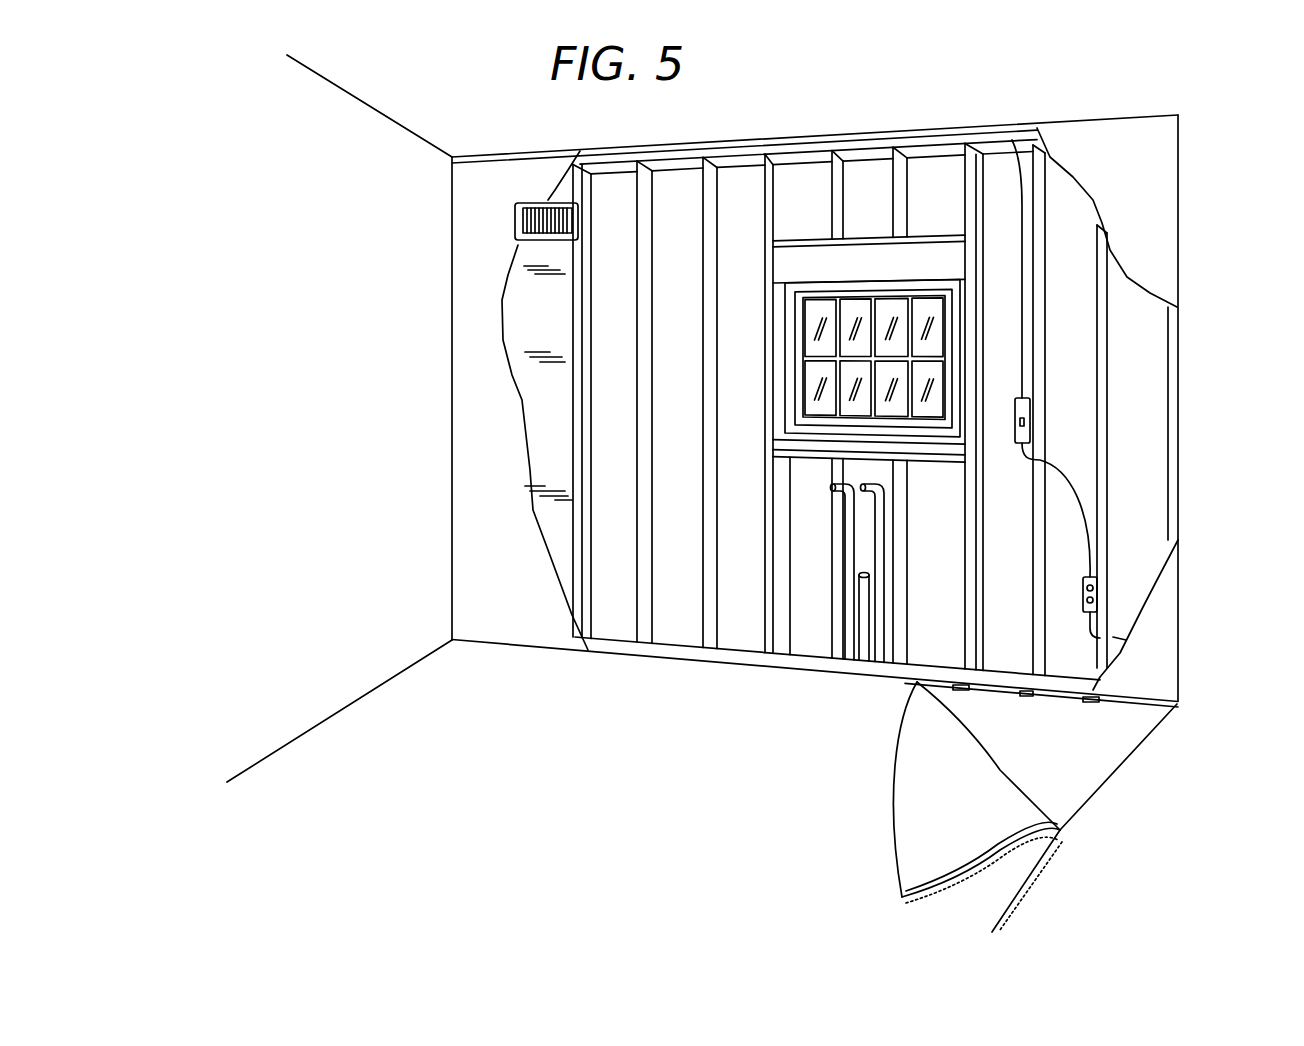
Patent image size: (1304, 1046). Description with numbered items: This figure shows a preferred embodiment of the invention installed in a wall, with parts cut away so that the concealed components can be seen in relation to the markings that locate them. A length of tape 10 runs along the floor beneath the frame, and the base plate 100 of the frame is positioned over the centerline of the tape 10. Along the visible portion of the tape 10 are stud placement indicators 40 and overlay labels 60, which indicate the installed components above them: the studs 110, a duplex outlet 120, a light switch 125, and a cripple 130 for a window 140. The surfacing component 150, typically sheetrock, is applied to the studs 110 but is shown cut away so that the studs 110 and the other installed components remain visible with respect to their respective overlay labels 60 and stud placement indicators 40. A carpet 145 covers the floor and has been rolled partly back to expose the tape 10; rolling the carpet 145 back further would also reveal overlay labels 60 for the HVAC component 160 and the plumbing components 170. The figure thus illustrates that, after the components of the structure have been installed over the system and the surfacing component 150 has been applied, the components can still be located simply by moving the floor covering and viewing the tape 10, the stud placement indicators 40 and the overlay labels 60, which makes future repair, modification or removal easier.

The tape 10 is at (1127, 695).
The stud placement indicator 40 is at (968, 692).
The overlay label 60 is at (953, 692).
The base plate 100 is at (997, 663).
The stud 110 is at (590, 255).
The duplex outlet 120 is at (1083, 597).
The light switch 125 is at (1015, 433).
The cripple 130 is at (957, 593).
The window 140 is at (795, 378).
The carpet 145 is at (893, 848).
The surfacing component 150 is at (373, 180).
The HVAC component 160 is at (547, 428).
The plumbing component 170 is at (870, 587).